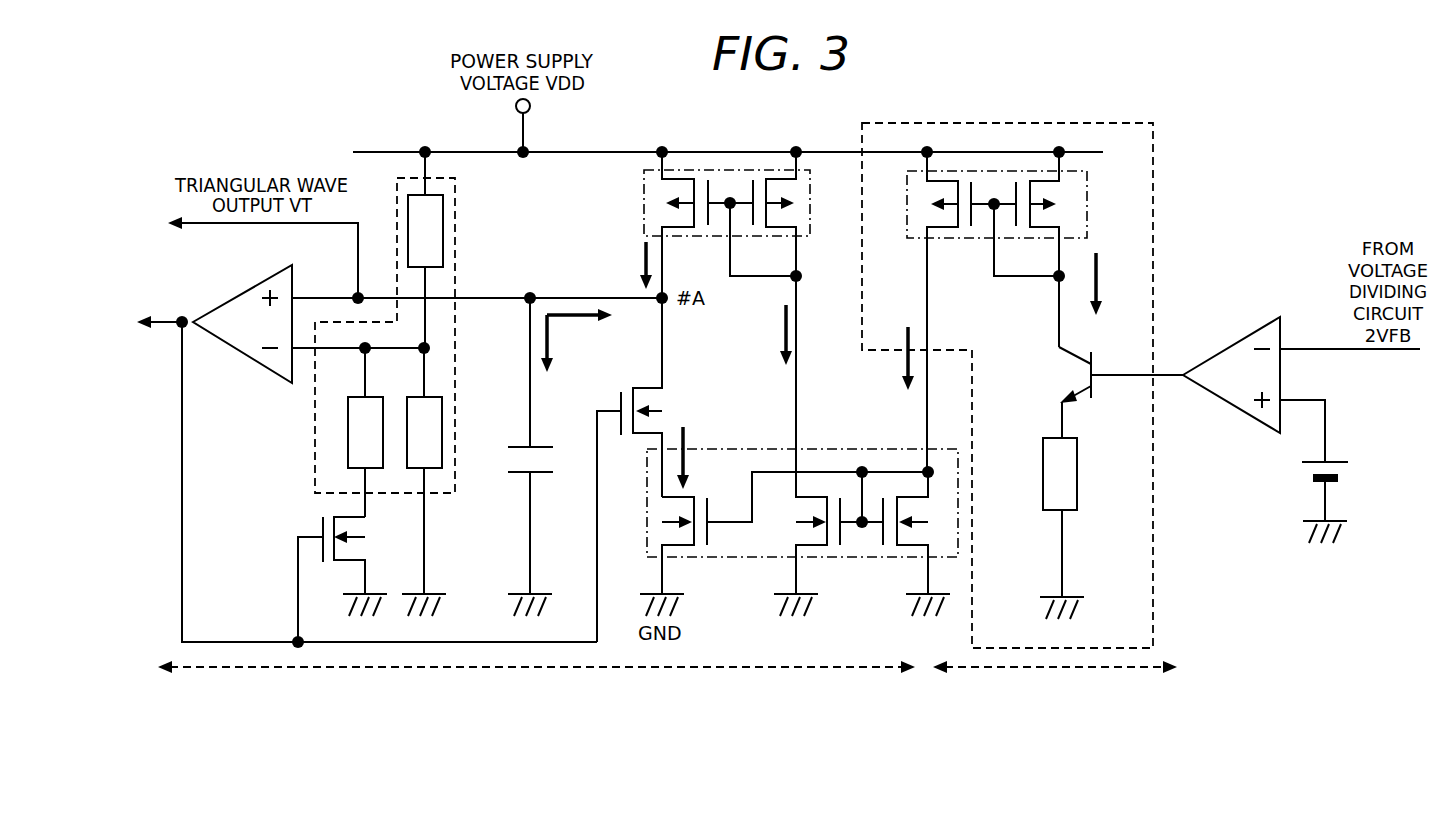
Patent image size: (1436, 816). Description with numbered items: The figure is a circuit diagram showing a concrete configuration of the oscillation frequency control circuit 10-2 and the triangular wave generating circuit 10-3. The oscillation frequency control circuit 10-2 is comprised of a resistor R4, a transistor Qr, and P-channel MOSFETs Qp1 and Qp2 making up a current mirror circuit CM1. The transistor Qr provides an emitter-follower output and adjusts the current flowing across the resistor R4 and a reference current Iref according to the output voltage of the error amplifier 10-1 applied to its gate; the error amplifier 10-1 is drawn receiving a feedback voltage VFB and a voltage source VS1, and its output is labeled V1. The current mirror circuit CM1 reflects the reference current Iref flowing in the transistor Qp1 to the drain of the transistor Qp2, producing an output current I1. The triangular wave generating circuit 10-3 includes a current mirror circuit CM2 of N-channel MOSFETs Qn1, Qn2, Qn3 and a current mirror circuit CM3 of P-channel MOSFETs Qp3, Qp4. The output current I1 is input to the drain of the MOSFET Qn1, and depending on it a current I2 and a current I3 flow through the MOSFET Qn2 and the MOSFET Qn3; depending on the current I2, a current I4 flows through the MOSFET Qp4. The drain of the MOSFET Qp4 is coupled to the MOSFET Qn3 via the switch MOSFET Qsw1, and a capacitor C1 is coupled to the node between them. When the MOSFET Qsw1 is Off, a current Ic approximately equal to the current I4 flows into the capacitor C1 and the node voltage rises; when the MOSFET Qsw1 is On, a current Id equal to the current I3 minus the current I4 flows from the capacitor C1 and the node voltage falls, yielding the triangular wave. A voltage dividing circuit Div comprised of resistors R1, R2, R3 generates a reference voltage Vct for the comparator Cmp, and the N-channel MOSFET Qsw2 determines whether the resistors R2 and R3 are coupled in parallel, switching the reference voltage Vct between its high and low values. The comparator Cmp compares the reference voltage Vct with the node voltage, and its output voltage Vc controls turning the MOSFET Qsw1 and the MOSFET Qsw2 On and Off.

The comparator Cmp is at (233, 298).
The resistor R1 is at (403, 250).
The resistor R2 is at (443, 482).
The resistor R3 is at (350, 432).
The resistor R4 is at (1073, 528).
The voltage dividing circuit Div is at (455, 473).
The MOSFET Qsw1 is at (628, 470).
The N-channel type MOSFET Qsw2 is at (322, 574).
The capacitor C1 is at (535, 457).
The P-channel type MOSFET Qp1 is at (1059, 249).
The P-channel type MOSFET Qp2 is at (940, 312).
The P-channel type MOSFET Qp3 is at (789, 217).
The P-channel type MOSFET Qp4 is at (676, 225).
The N-channel type MOSFET Qn1 is at (916, 541).
The N-channel type MOSFET Qn2 is at (816, 446).
The N-channel type MOSFET Qn3 is at (765, 544).
The transistor Qr is at (1111, 392).
The current mirror circuit CM1 is at (970, 239).
The current mirror circuit CM2 is at (751, 449).
The current mirror circuit CM3 is at (698, 237).
The voltage source VS1 is at (1349, 502).
The error amplifier 10-1 is at (1221, 347).
The oscillation frequency control circuit 10-2 is at (1053, 727).
The triangular wave generating circuit 10-3 is at (588, 703).
The output current I1 is at (894, 359).
The current I2 is at (775, 335).
The current I3 is at (694, 455).
The current I4 is at (634, 265).
The current Id is at (591, 316).
The current Ic is at (546, 359).
The reference current Iref is at (1100, 294).
The output voltage Vc is at (161, 346).
The reference voltage Vct is at (302, 352).
The voltage V1 is at (1175, 353).
The feedback voltage VFB is at (1305, 338).